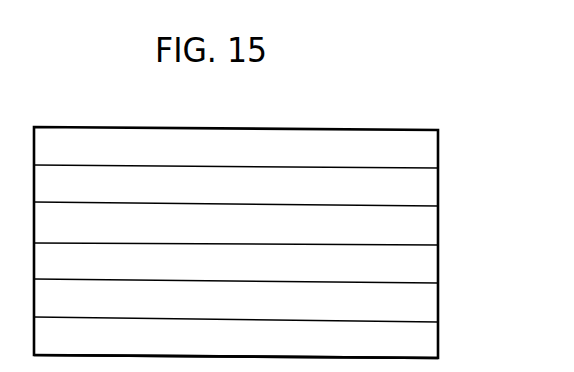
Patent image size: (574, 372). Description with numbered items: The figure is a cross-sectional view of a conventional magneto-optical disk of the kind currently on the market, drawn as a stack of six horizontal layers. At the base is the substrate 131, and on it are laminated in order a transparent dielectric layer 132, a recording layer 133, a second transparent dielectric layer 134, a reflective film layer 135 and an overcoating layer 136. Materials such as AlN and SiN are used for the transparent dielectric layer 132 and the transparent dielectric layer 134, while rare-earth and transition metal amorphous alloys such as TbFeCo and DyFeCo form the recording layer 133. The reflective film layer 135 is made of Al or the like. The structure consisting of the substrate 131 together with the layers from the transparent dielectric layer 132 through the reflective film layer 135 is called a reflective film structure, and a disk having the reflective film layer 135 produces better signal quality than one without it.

The substrate 131 is at (426, 149).
The transparent dielectric layer 132 is at (426, 191).
The recording layer 133 is at (426, 235).
The transparent dielectric layer 134 is at (426, 268).
The reflective film layer 135 is at (426, 308).
The overcoating layer 136 is at (426, 348).